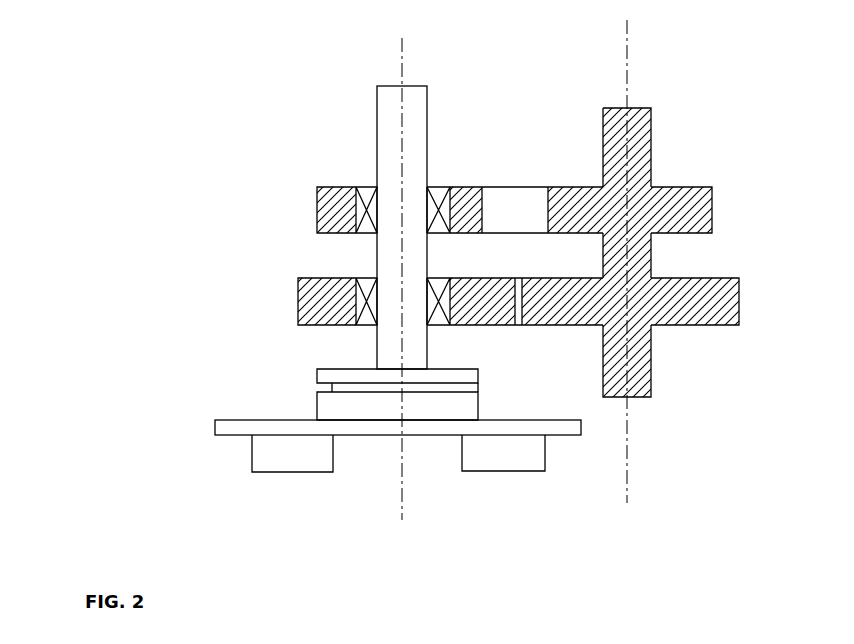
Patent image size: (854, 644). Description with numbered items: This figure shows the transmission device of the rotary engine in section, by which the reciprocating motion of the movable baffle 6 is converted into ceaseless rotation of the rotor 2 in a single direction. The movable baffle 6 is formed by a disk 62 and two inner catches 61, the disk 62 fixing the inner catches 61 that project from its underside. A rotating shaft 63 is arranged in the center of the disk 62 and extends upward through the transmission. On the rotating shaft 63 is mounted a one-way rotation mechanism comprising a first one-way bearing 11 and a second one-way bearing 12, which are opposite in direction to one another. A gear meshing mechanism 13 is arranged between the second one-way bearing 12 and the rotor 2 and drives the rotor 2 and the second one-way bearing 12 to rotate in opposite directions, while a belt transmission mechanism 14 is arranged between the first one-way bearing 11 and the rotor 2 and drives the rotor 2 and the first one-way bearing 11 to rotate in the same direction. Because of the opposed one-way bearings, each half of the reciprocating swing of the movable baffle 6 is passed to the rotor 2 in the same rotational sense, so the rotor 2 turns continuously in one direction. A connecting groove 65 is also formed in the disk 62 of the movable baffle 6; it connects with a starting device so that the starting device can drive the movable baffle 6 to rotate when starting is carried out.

The rotor 2 is at (632, 120).
The movable baffle 6 is at (248, 373).
The first one-way bearing 11 is at (437, 187).
The second one-way bearing 12 is at (358, 297).
The gear meshing mechanism 13 is at (318, 288).
The belt transmission mechanism 14 is at (330, 203).
The inner catch 61 is at (275, 460).
The disk 62 is at (212, 419).
The rotating shaft 63 is at (402, 128).
The connecting groove 65 is at (463, 385).